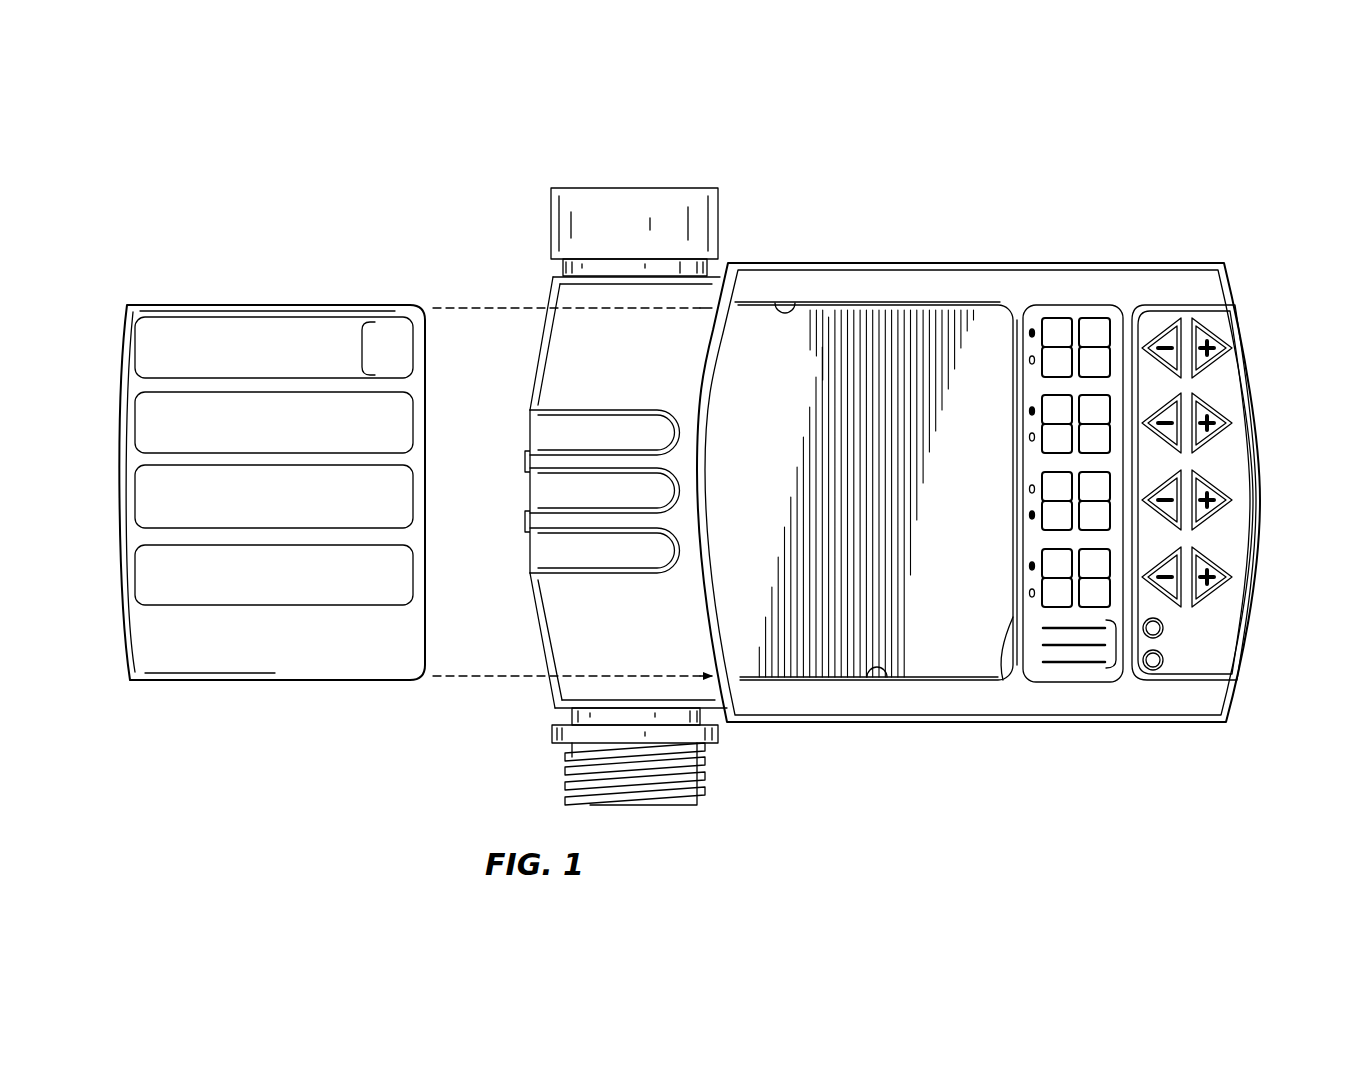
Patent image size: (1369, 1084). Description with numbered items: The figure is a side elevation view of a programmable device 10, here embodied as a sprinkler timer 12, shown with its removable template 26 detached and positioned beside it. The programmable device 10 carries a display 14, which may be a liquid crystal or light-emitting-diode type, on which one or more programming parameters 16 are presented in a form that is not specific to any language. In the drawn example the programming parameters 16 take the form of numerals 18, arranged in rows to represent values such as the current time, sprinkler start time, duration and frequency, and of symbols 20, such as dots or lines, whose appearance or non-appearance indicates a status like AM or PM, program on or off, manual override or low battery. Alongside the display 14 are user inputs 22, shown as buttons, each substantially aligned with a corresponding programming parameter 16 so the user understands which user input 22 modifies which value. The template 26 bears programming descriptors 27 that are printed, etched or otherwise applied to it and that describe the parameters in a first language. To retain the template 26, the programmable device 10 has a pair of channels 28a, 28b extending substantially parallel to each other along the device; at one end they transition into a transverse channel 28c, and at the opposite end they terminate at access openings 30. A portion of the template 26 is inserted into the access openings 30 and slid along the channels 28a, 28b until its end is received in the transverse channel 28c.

The programmable device 10 is at (1132, 180).
The sprinkler timer 12 is at (1228, 275).
The display 14 is at (1053, 313).
The programming parameter 16 is at (1025, 411).
The numeral 18 is at (1093, 313).
The symbol 20 is at (1030, 330).
The user input 22 is at (1205, 363).
The template 26 is at (128, 288).
The programming descriptor 27 is at (361, 346).
The channel 28a is at (798, 303).
The channel 28b is at (882, 687).
The transverse channel 28c is at (1003, 680).
The access opening 30 is at (705, 308).